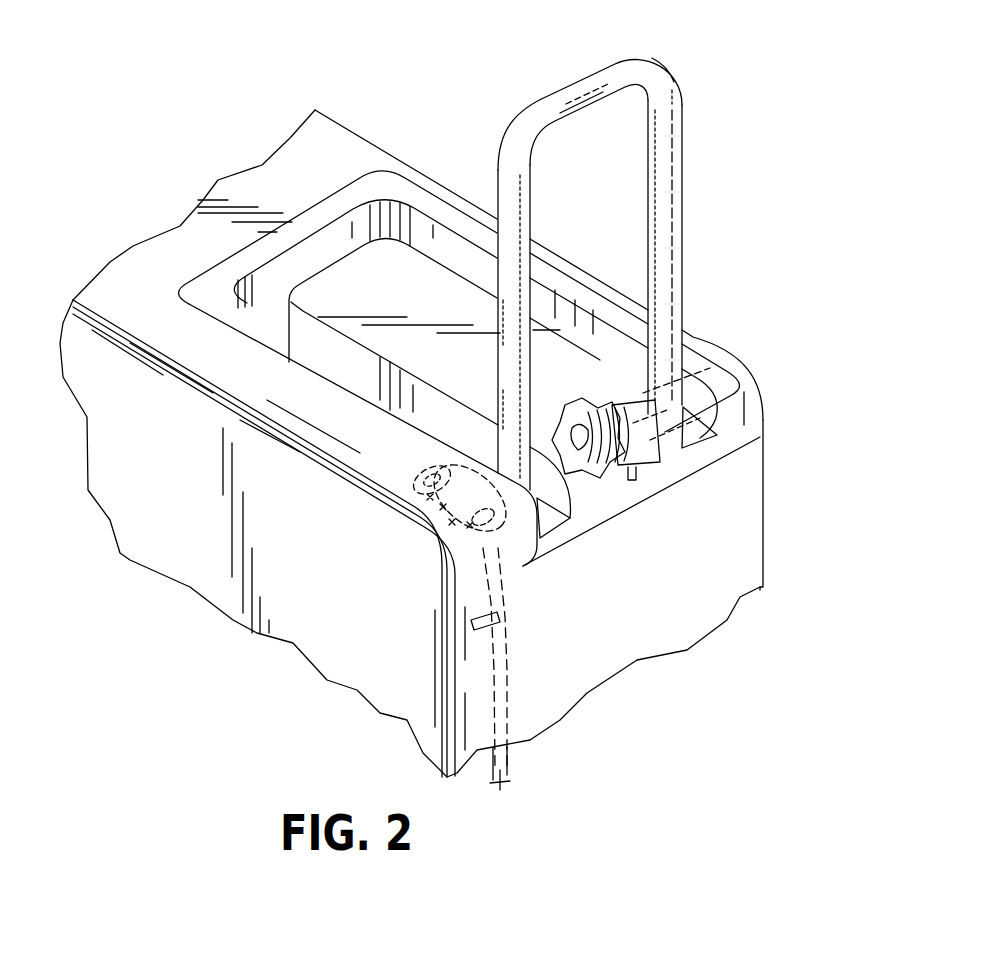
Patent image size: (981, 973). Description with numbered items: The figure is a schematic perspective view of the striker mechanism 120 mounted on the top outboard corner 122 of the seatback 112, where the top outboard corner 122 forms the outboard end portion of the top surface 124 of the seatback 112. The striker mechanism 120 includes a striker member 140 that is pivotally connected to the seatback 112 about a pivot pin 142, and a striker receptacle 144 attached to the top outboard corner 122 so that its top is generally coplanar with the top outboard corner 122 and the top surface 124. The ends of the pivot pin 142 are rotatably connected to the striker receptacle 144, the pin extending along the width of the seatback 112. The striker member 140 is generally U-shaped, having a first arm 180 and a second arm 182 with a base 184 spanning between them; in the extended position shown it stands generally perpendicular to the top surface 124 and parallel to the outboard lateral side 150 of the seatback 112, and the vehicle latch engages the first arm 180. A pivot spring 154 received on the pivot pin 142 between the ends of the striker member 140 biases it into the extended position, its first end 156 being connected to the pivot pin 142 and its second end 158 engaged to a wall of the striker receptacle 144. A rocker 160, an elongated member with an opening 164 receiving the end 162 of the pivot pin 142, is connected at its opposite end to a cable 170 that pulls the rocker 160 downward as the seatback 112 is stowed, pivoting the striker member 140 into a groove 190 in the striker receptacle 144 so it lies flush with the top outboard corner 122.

The seatback 112 is at (150, 548).
The striker mechanism 120 is at (613, 252).
The top outboard corner 122 is at (347, 170).
The top surface 124 is at (143, 257).
The striker member 140 is at (600, 252).
The pivot pin 142 is at (587, 455).
The striker receptacle 144 is at (443, 206).
The outboard lateral side 150 is at (658, 632).
The pivot spring 154 is at (617, 462).
The first end 156 is at (575, 423).
The second end 158 is at (625, 453).
The rocker 160 is at (413, 512).
The end 162 is at (428, 546).
The opening 164 is at (487, 537).
The cable 170 is at (500, 600).
The first arm 180 is at (670, 265).
The second arm 182 is at (510, 345).
The base 184 is at (572, 90).
The groove 190 is at (323, 243).